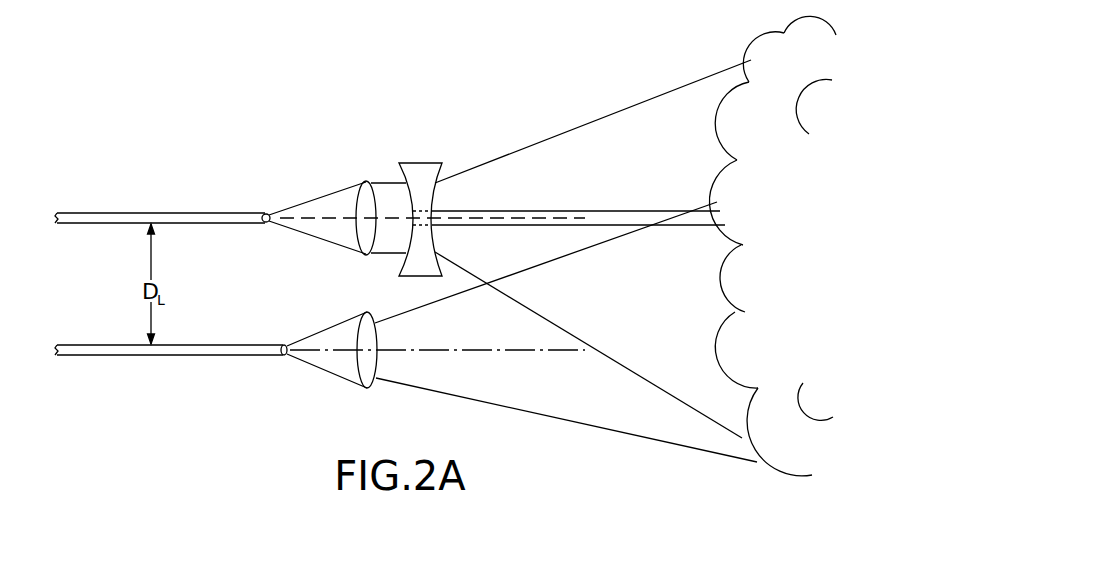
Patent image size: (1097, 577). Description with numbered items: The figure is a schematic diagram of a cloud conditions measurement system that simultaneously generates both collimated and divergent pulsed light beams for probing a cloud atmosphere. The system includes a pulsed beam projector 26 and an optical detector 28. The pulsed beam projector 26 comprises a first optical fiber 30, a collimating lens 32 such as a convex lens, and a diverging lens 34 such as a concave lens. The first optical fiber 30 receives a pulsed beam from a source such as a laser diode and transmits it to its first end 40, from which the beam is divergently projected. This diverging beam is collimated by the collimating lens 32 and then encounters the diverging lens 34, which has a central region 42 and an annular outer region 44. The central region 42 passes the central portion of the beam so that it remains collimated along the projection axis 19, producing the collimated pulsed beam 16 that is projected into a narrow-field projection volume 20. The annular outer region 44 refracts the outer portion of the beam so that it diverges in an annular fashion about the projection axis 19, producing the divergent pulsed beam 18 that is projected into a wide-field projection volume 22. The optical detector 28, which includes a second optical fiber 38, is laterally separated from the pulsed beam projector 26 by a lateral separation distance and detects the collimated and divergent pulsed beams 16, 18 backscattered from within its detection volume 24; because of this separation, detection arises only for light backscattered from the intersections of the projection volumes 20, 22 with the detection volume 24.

The collimated pulsed beam 16 is at (510, 204).
The divergent pulsed beam 18 is at (531, 132).
The projection axis 19 is at (309, 220).
The narrow-field projection volume 20 is at (603, 211).
The wide-field projection volume 22 is at (611, 114).
The detection volume 24 is at (603, 428).
The pulsed beam projector 26 is at (212, 195).
The optical detector 28 is at (272, 383).
The first optical fiber 30 is at (127, 212).
The collimating lens 32 is at (366, 190).
The diverging lens 34 is at (419, 163).
The second optical fiber 38 is at (201, 343).
The first end 40 is at (266, 232).
The central region 42 is at (423, 197).
The annular outer region 44 is at (452, 247).